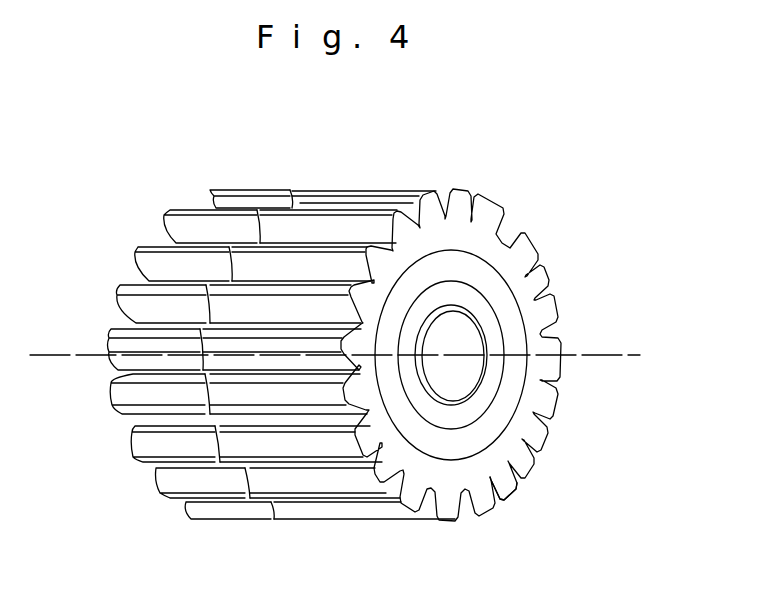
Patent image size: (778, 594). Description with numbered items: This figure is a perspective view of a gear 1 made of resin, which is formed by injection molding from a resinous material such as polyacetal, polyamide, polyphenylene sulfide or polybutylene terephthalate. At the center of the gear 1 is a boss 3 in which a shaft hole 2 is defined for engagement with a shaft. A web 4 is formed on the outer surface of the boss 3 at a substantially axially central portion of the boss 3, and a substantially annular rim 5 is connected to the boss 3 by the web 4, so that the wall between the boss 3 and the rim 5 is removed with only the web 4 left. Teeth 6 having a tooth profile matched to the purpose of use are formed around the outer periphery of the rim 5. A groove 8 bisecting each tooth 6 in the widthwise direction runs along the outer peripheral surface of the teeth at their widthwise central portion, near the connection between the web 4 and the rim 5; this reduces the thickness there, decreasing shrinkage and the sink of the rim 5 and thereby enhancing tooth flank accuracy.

The gear 1 is at (506, 214).
The shaft hole 2 is at (455, 378).
The boss 3 is at (481, 314).
The web 4 is at (409, 278).
The rim 5 is at (475, 465).
The teeth 6 is at (153, 447).
The groove 8 is at (286, 240).